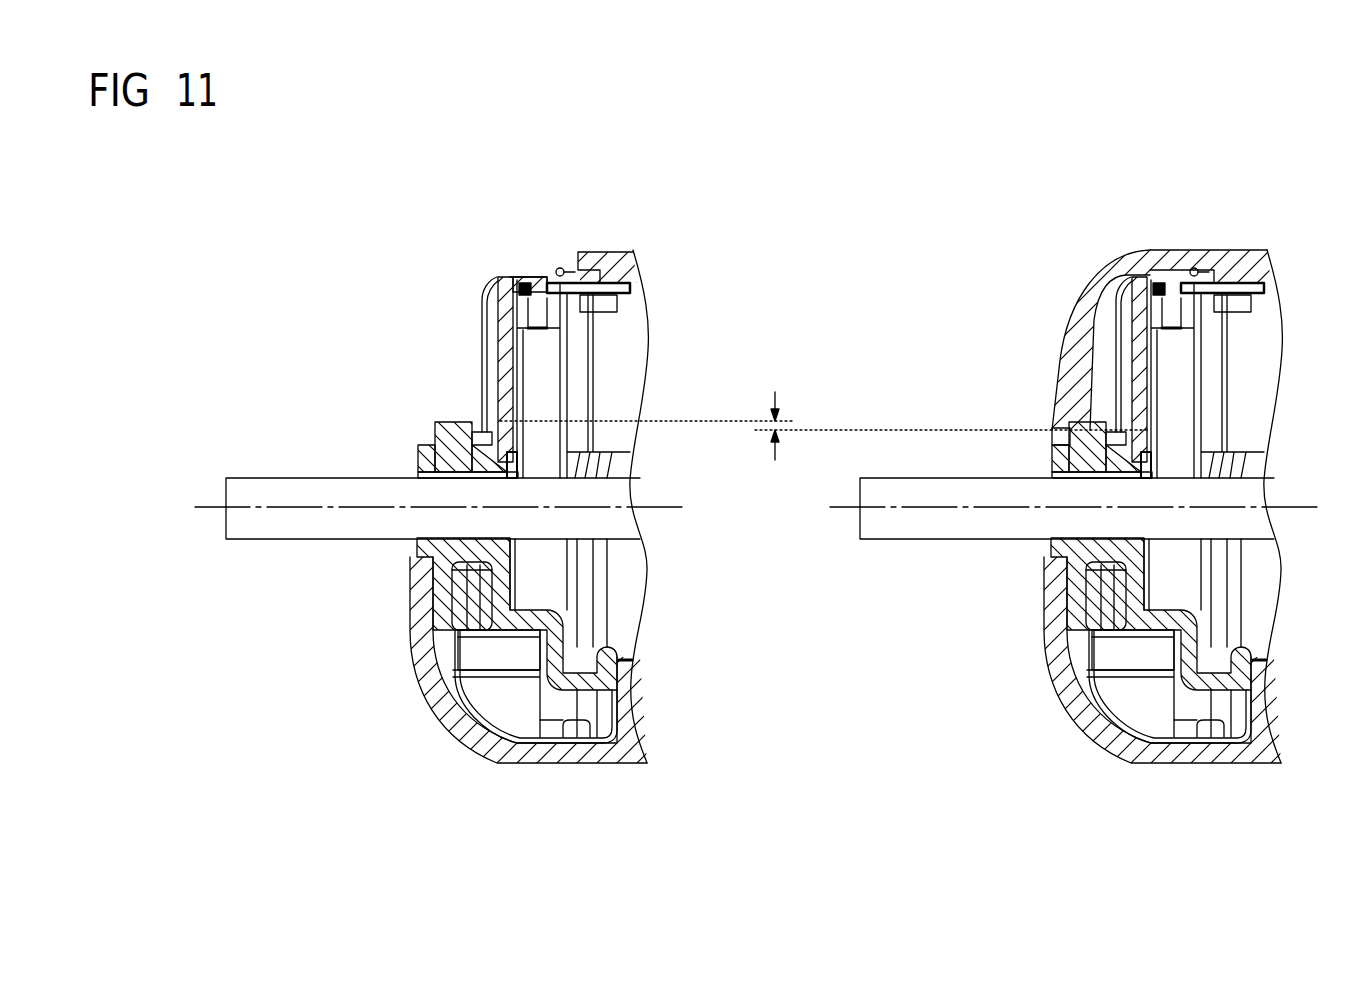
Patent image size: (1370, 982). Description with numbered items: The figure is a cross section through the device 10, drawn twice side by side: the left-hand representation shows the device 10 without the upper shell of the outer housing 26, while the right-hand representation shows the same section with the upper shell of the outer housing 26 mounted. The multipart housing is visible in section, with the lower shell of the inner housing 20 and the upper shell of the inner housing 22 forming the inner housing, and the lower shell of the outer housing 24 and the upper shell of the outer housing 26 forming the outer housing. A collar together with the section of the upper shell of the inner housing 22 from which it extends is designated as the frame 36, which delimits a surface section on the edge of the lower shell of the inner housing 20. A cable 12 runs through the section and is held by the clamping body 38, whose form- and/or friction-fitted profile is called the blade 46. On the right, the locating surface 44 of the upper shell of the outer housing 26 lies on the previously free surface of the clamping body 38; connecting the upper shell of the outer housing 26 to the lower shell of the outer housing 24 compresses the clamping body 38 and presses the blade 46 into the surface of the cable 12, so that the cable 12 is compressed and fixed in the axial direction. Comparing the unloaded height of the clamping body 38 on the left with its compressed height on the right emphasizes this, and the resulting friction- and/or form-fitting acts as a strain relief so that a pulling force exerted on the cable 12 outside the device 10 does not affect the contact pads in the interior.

The device 10 is at (613, 183).
The cable 12 is at (243, 541).
The lower shell of the inner housing 20 is at (413, 546).
The upper shell of the inner housing 22 is at (505, 290).
The lower shell of the outer housing 24 is at (468, 764).
The upper shell of the outer housing 26 is at (1100, 292).
The frame 36 is at (420, 458).
The clamping body 38 is at (452, 437).
The locating surface 44 is at (1062, 436).
The blade 46 is at (455, 481).